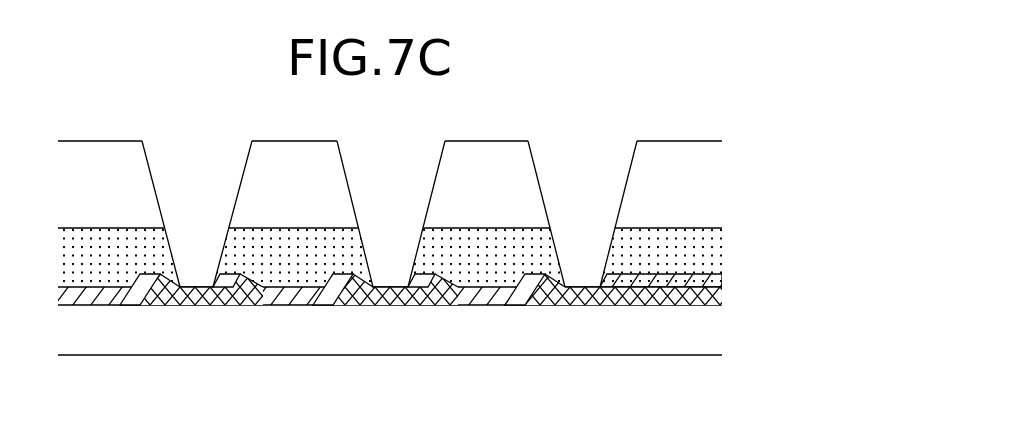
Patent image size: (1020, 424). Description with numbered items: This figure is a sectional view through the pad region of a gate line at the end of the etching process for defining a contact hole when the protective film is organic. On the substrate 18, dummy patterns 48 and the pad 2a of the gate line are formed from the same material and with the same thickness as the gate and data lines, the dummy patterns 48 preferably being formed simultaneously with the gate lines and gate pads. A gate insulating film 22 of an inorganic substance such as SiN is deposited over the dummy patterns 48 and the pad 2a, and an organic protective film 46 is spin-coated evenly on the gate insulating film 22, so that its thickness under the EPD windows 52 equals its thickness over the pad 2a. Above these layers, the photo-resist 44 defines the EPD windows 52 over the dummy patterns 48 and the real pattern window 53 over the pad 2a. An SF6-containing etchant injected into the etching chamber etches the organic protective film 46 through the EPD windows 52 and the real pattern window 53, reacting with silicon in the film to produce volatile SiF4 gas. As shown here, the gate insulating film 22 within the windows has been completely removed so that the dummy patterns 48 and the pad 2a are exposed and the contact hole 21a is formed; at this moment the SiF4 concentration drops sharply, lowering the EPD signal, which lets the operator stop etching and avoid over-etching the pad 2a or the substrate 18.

The photo-resist 44 is at (685, 140).
The EPD window 52 is at (233, 179).
The real pattern window 53 is at (584, 179).
The contact hole 21a is at (600, 199).
The organic protective film 46 is at (297, 263).
The dummy pattern 48 is at (163, 305).
The gate insulating film 22 is at (482, 305).
The pad of the gate line 2a is at (560, 305).
The substrate 18 is at (677, 327).